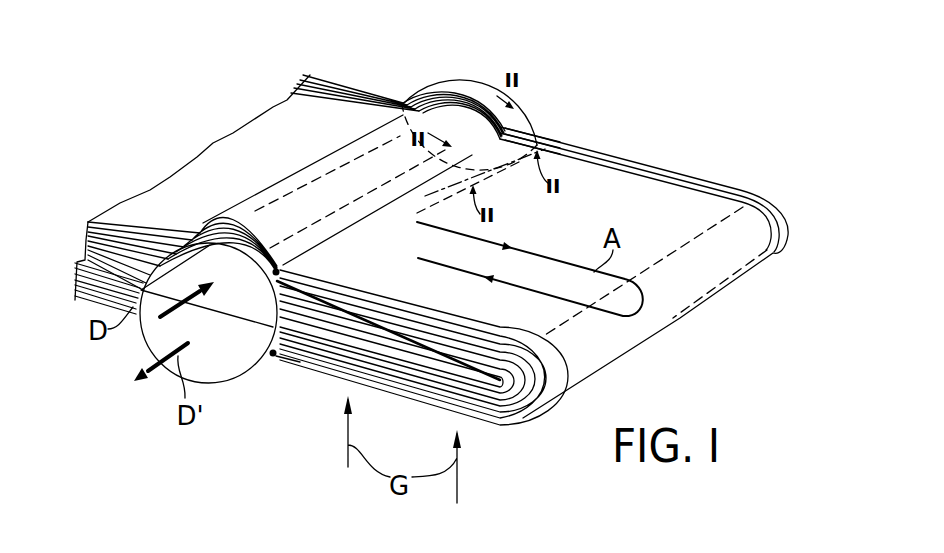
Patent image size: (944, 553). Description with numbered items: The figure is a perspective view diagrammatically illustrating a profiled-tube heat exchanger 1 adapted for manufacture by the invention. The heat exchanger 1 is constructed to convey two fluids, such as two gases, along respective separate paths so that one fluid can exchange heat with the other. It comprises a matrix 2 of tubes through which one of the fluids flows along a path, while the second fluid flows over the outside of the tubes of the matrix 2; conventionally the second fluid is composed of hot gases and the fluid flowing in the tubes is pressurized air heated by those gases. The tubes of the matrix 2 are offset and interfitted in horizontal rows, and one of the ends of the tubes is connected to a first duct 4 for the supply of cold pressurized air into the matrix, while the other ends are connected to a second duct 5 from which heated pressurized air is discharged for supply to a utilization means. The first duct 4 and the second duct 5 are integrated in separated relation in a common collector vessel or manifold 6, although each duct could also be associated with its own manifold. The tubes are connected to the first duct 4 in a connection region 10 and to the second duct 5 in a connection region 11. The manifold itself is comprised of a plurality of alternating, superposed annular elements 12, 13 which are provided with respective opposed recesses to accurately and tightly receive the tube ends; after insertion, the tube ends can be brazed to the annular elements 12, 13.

The heat exchanger 1 is at (541, 70).
The matrix 2 is at (288, 110).
The first duct 4 is at (225, 306).
The second duct 5 is at (203, 361).
The collector vessel or manifold 6 is at (418, 103).
The connection region 10 is at (332, 255).
The connection region 11 is at (278, 357).
The annular element 12 is at (474, 97).
The annular element 13 is at (518, 124).